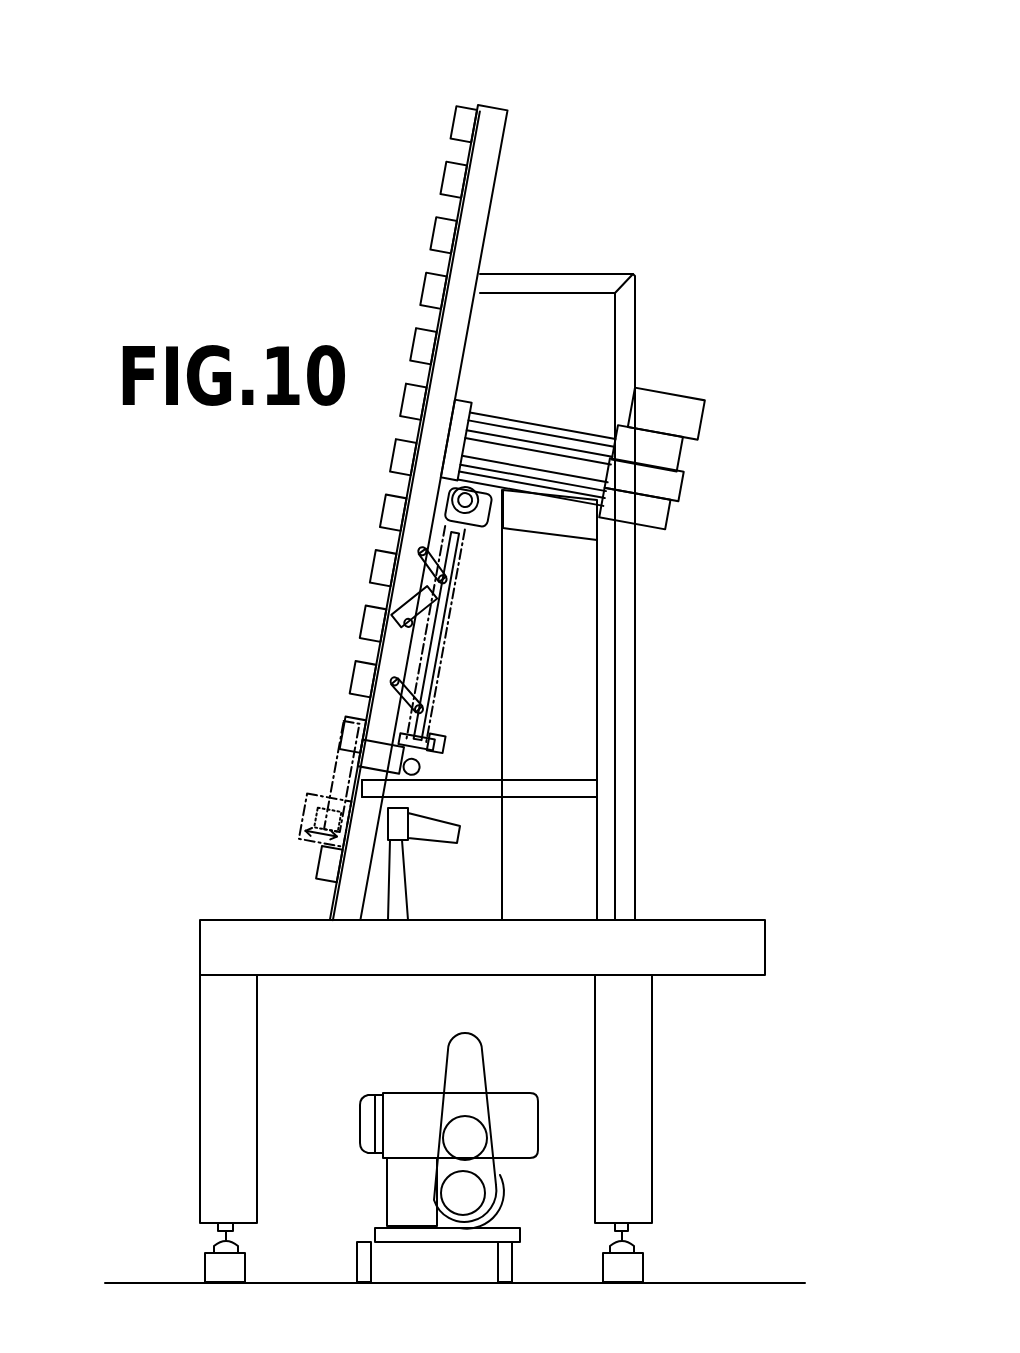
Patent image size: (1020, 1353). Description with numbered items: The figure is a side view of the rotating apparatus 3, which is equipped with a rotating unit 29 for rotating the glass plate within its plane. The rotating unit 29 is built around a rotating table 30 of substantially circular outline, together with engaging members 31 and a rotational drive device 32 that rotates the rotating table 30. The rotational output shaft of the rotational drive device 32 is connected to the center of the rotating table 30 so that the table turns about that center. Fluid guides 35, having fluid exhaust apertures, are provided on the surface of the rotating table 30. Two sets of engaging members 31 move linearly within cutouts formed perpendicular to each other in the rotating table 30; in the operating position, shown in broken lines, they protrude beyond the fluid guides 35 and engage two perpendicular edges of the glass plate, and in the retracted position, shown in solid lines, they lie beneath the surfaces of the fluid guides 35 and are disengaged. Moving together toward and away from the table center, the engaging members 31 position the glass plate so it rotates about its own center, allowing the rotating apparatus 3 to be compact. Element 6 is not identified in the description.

The rotating apparatus 3 is at (626, 66).
The product / printed sheet 6 is at (310, 813).
The rotating unit 29 is at (533, 346).
The rotating table 30 is at (493, 113).
The engaging members 31 is at (340, 778).
The rotational drive device 32 is at (689, 481).
The fluid guides 35 is at (461, 127).